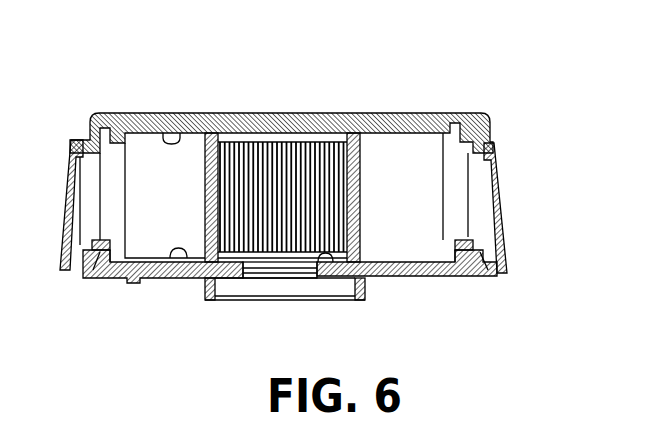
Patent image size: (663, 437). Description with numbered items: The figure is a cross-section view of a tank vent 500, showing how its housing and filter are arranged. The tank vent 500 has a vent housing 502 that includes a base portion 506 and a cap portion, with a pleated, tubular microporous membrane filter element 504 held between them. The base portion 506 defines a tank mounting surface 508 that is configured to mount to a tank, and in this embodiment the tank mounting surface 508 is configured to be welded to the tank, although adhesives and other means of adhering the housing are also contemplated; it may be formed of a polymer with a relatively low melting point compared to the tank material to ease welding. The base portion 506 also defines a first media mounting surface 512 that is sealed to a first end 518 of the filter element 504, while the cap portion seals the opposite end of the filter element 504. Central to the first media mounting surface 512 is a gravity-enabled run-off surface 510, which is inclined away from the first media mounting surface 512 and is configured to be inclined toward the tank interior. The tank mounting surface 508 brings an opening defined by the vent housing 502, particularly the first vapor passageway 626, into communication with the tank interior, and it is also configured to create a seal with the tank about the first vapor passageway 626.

The tank vent 500 is at (315, 50).
The vent housing 502 is at (500, 207).
The pleated, tubular microporous membrane filter element 504 is at (380, 148).
The base portion 506 is at (149, 288).
The tank mounting surface 508 is at (422, 274).
The gravity-enabled run-off surface 510 is at (317, 280).
The first media mounting surface 512 is at (190, 262).
The first end 518 is at (180, 131).
The first vapor passageway 626 is at (253, 280).